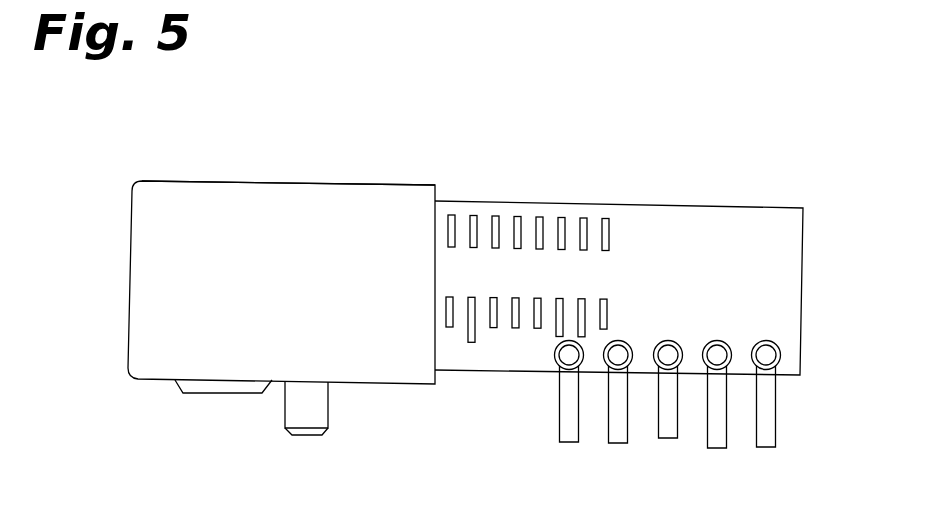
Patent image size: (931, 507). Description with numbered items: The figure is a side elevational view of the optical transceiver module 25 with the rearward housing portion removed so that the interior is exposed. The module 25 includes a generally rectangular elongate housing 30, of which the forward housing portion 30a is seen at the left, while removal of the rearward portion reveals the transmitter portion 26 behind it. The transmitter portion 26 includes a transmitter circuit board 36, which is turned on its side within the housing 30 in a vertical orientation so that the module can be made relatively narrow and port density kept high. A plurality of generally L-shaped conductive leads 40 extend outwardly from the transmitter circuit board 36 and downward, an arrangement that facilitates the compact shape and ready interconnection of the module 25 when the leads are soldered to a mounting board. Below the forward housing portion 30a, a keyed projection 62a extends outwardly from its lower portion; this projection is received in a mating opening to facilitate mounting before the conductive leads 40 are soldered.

The optical transceiver module 25 is at (218, 165).
The transmitter portion 26 is at (766, 147).
The housing 30 is at (272, 182).
The forward housing portion 30a is at (352, 183).
The transmitter circuit board 36 is at (768, 312).
The conductive leads 40 is at (668, 433).
The keyed projection 62a is at (297, 405).